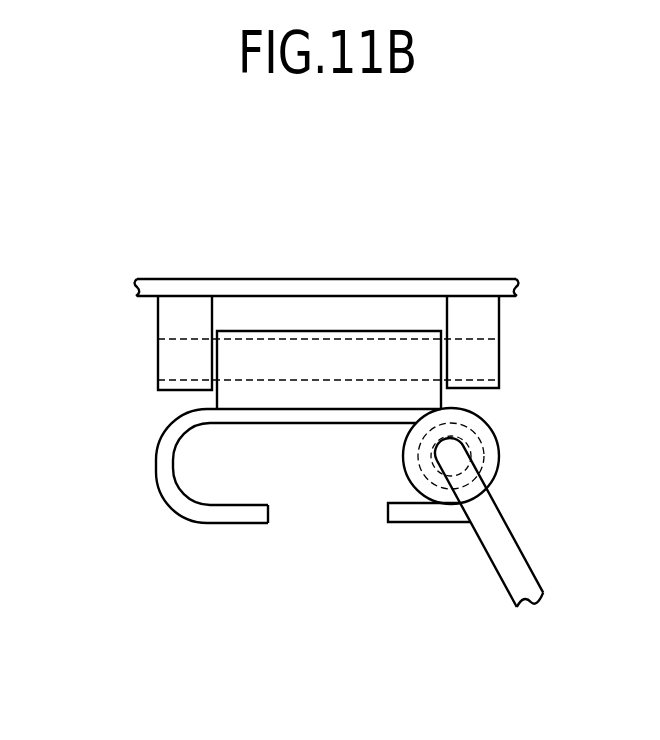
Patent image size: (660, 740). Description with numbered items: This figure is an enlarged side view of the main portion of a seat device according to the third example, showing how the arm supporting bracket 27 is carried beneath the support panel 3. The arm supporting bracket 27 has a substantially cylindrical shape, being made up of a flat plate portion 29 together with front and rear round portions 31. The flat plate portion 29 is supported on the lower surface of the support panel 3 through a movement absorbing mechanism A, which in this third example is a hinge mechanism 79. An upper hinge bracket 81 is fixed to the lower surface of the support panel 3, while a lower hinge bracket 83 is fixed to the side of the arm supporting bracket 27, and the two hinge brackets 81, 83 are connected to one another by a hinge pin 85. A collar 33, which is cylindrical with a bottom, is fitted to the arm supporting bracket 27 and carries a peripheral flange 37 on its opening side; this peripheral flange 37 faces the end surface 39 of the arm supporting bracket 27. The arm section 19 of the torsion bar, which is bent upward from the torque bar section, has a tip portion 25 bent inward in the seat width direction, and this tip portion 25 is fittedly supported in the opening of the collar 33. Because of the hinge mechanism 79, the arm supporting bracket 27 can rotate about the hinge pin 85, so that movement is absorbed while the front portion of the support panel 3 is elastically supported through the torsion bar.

The support panel 3 is at (510, 298).
The arm section 19 is at (498, 566).
The tip portion 25 is at (484, 447).
The arm supporting bracket 27 is at (163, 510).
The flat plate portion 29 is at (292, 425).
The round portion 31 is at (158, 470).
The collar 33 is at (405, 463).
The peripheral flange 37 is at (483, 420).
The end surface 39 is at (408, 518).
The hinge mechanism 79 is at (500, 335).
The upper hinge bracket 81 is at (493, 355).
The lower hinge bracket 83 is at (428, 398).
The hinge pin 85 is at (318, 338).
The movement absorbing mechanism A is at (158, 352).